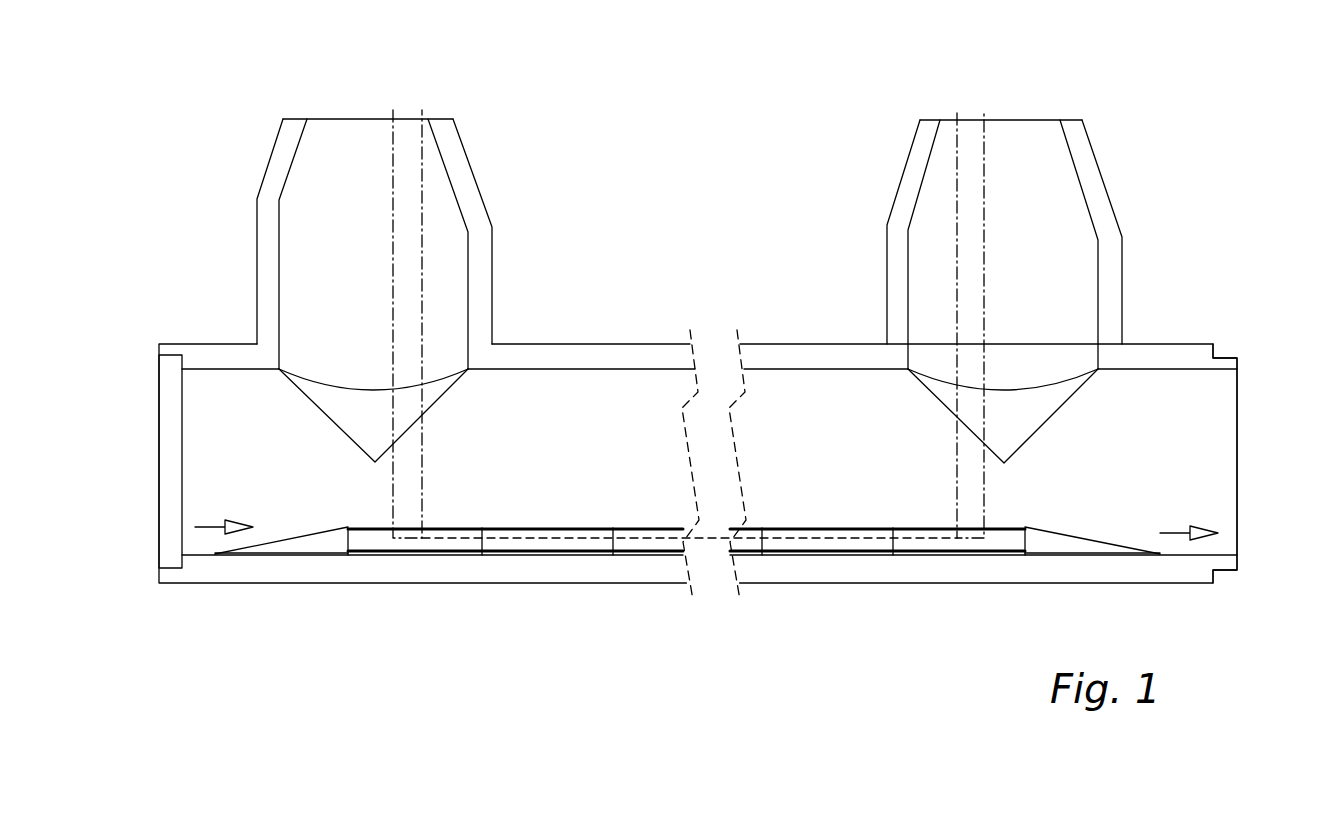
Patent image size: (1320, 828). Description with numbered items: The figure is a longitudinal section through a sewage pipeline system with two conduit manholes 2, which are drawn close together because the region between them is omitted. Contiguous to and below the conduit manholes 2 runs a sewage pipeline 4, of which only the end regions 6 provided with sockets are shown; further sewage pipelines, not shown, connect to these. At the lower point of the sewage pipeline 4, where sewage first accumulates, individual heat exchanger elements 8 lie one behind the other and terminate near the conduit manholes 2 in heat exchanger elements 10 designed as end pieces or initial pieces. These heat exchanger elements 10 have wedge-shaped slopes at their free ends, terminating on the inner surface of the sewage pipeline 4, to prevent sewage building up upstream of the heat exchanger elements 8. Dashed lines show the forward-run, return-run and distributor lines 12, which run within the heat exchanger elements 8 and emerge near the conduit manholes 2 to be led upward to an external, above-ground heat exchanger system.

The conduit manhole 2 is at (343, 132).
The sewage pipeline 4 is at (570, 440).
The end region 6 is at (167, 505).
The heat exchanger element 8 is at (570, 535).
The heat exchanger element designed as end piece or initial piece 10 is at (307, 538).
The forward-run, return-run and distributor lines 12 is at (393, 158).